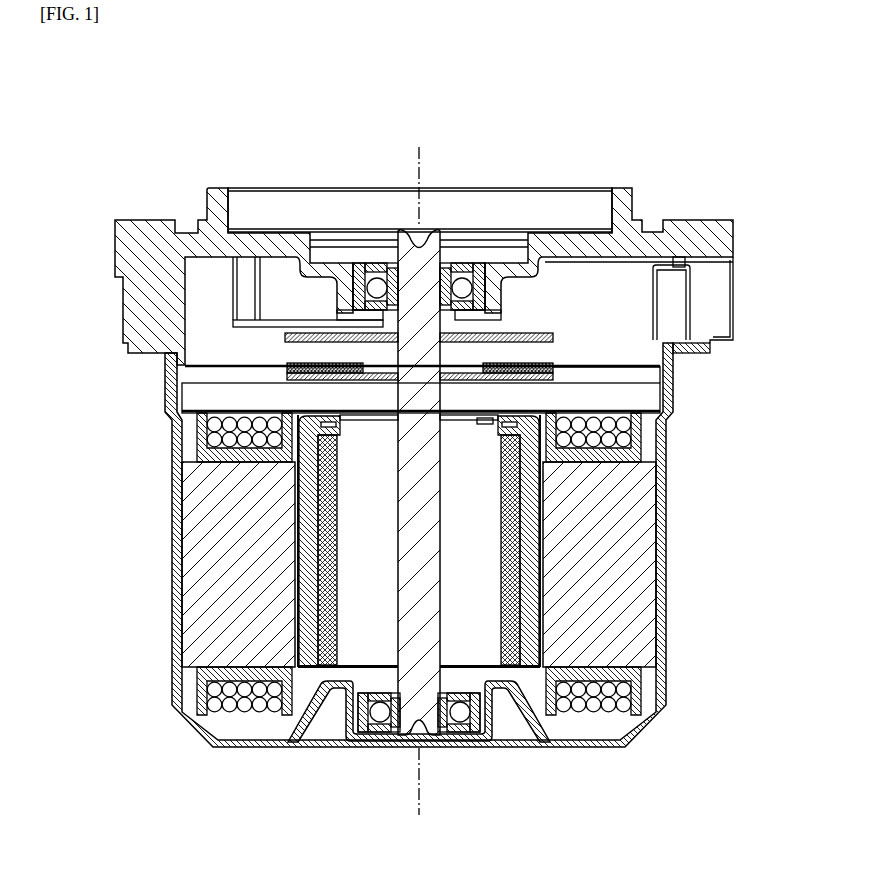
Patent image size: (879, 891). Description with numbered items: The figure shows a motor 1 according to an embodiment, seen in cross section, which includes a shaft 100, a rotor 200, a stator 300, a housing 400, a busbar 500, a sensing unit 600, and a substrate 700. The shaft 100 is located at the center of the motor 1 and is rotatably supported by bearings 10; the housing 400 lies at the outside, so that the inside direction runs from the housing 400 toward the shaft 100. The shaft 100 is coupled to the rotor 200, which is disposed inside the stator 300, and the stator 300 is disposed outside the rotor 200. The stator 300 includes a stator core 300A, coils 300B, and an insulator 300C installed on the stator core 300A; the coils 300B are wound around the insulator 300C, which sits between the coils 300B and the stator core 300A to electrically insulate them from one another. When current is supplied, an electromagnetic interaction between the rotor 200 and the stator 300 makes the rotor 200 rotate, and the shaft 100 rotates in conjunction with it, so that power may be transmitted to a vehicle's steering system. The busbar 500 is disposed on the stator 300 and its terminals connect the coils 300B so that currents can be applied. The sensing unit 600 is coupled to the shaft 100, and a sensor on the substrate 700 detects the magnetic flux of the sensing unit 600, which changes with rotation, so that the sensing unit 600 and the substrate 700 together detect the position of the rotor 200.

The motor 1 is at (79, 77).
The bearings 10 is at (487, 262).
The shaft 100 is at (424, 566).
The rotor 200 is at (354, 488).
The stator 300 is at (494, 564).
The stator core 300A is at (633, 497).
The coils 300B is at (630, 424).
The insulator 300C is at (641, 453).
The housing 400 is at (165, 372).
The busbar 500 is at (172, 418).
The sensing unit 600 is at (562, 356).
The substrate 700 is at (562, 336).